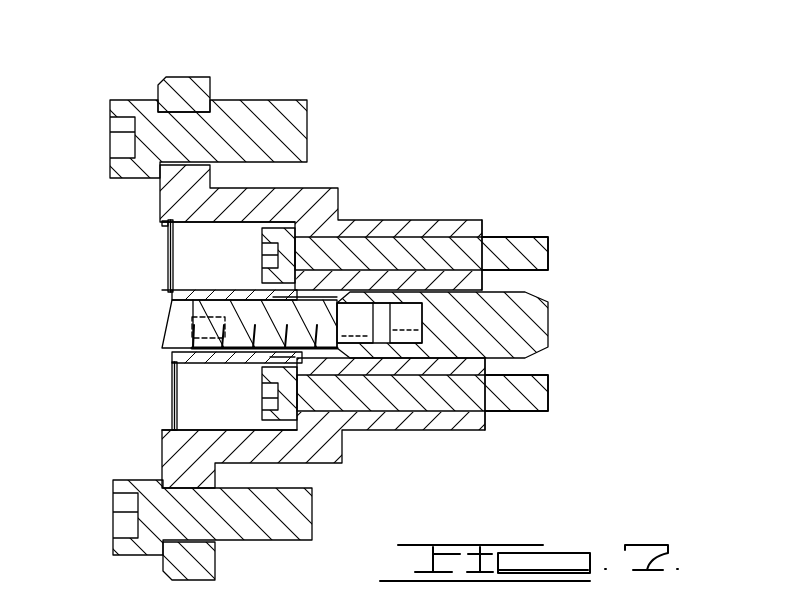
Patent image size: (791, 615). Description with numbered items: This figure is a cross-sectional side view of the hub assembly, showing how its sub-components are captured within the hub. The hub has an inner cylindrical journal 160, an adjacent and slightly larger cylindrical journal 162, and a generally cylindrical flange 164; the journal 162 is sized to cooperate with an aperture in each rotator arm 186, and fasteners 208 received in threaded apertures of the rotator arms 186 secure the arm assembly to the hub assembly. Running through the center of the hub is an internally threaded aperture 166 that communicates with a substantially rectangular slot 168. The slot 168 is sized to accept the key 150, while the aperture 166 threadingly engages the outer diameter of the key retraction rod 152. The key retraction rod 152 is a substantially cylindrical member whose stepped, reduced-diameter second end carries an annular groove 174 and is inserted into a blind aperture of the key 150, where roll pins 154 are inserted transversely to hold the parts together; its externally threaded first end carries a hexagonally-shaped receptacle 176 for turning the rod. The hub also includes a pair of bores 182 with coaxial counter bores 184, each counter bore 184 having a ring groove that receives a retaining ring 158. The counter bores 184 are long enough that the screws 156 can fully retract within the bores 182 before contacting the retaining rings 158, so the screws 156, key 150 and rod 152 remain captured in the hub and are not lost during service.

The key 150 is at (535, 322).
The key retraction rod 152 is at (242, 306).
The roll pins 154 is at (380, 310).
The screws 156 is at (550, 253).
The retaining rings 158 is at (168, 277).
The inner cylindrical journal 160 is at (482, 220).
The cylindrical journal 162 is at (328, 187).
The flange 164 is at (173, 92).
The central internally threaded aperture 166 is at (167, 306).
The rectangular slot 168 is at (323, 355).
The annular groove 174 is at (383, 330).
The hexagonally-shaped receptacle 176 is at (200, 318).
The bores 182 is at (392, 242).
The counter bores 184 is at (230, 222).
The rotator arms 186 is at (167, 225).
The fasteners 208 is at (255, 128).